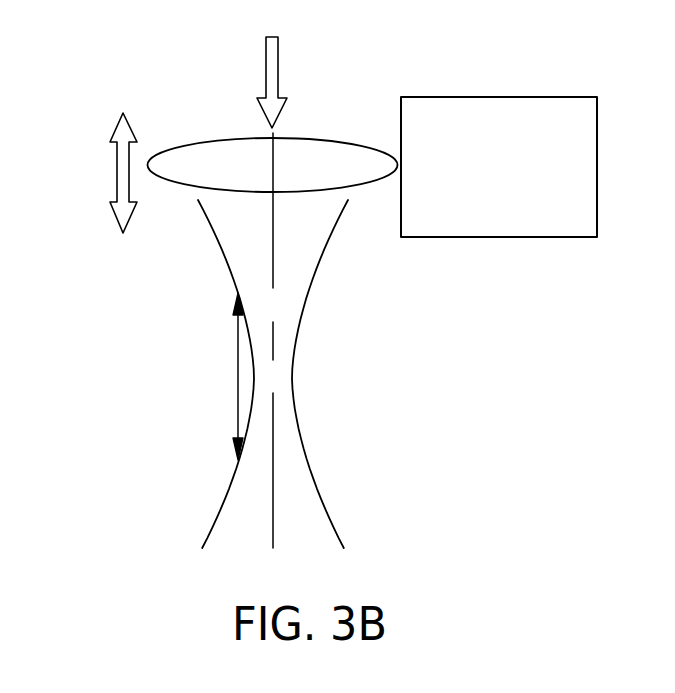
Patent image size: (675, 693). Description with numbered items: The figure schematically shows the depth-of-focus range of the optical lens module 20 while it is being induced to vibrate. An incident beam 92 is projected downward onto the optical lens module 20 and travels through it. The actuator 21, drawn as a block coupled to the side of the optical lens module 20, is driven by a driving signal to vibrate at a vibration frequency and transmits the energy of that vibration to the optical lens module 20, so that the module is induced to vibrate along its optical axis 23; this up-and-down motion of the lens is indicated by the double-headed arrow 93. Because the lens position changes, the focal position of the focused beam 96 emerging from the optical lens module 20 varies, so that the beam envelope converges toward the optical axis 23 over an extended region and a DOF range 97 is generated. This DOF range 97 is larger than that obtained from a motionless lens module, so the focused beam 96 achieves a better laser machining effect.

The optical lens module 20 is at (225, 148).
The actuator 21 is at (540, 110).
The optical axis 23 is at (273, 461).
The incident beam 92 is at (275, 55).
The lens movement direction arrow 93 is at (120, 167).
The focused beam 96 is at (313, 293).
The DOF range 97 is at (237, 375).